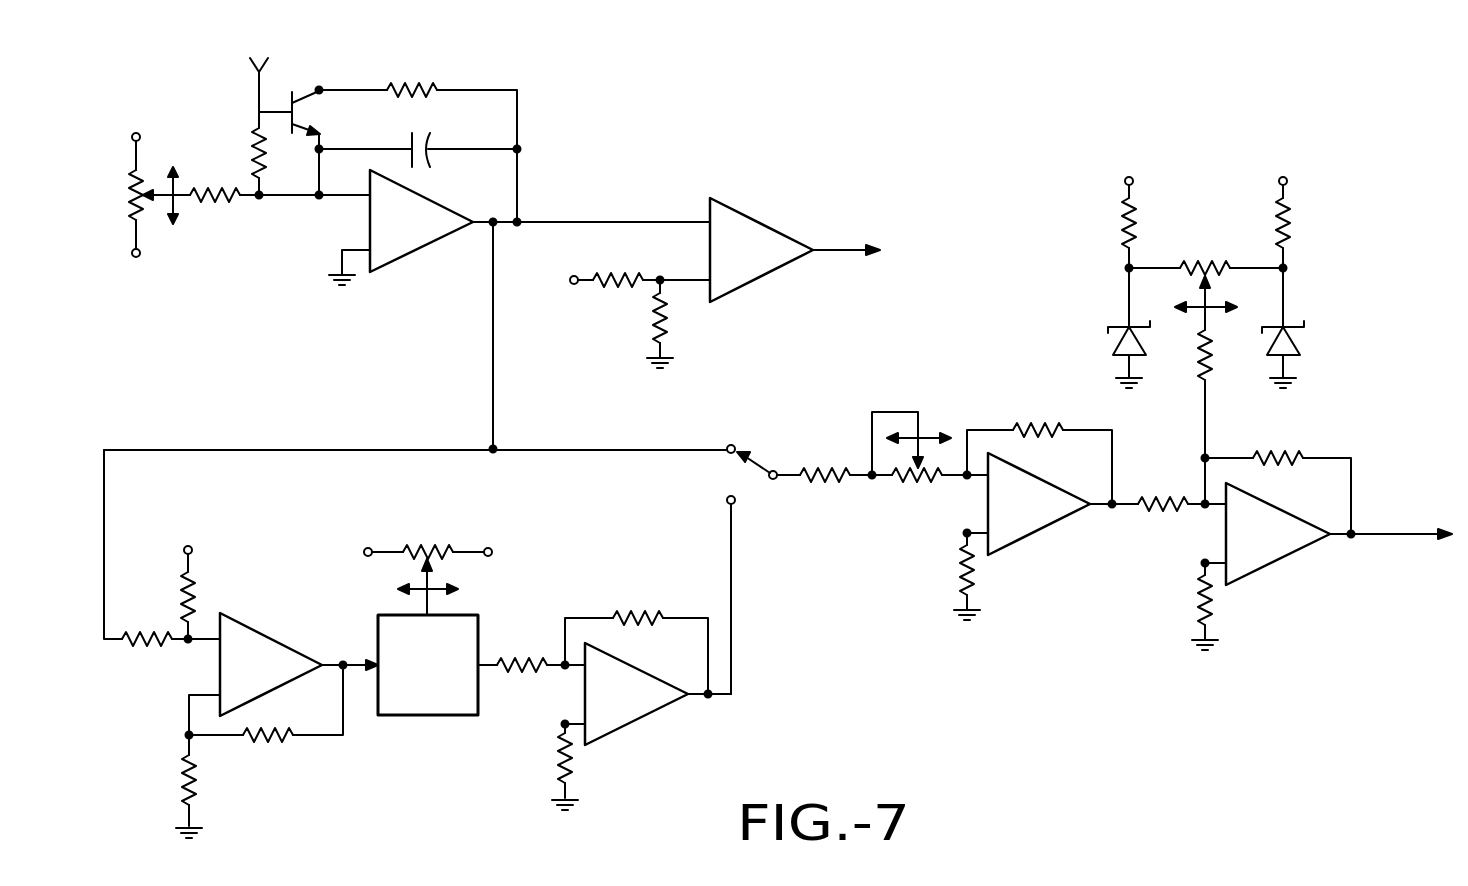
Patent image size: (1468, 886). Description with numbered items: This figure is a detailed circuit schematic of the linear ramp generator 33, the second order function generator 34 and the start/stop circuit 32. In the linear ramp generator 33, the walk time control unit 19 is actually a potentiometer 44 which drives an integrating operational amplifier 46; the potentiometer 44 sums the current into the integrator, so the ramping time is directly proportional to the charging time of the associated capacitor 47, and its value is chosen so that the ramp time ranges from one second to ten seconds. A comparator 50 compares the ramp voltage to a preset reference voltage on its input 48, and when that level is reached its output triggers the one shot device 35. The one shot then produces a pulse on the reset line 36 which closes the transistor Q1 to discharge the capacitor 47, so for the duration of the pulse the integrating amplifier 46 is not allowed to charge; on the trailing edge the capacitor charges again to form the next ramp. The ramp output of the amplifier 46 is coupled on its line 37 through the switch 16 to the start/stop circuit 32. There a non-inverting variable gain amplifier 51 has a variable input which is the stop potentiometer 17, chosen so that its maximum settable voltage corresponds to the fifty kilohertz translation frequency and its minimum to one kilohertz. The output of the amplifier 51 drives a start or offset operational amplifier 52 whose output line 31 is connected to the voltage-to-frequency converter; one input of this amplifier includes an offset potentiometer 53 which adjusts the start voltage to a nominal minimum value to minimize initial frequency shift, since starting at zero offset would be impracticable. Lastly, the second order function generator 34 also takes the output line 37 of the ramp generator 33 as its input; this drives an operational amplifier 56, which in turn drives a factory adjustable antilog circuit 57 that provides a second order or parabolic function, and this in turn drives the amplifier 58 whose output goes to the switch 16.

The linear ramp generator 33 is at (401, 239).
The potentiometer 44 is at (130, 184).
The walk time control unit 19 is at (263, 240).
The reset line 36 is at (282, 112).
The transistor Q1 is at (301, 143).
The capacitor 47 is at (428, 142).
The integrating operational amplifier 46 is at (413, 253).
The comparator amplifier 50 is at (757, 218).
The input 48 is at (690, 277).
The one shot device 35 is at (899, 267).
The offset potentiometer 53 is at (1200, 336).
The output line 37 is at (577, 448).
The switch 16 is at (758, 462).
The stop potentiometer 17 is at (900, 505).
The non-inverting variable gain amplifier 51 is at (1047, 526).
The start or offset operational amplifier 52 is at (1270, 565).
The start/stop circuit 32 is at (1114, 550).
The output line 31 is at (1391, 565).
The second order function generator 34 is at (417, 646).
The operational amplifier 56 is at (257, 632).
The antilog circuit 57 is at (425, 717).
The amplifier 58 is at (630, 727).